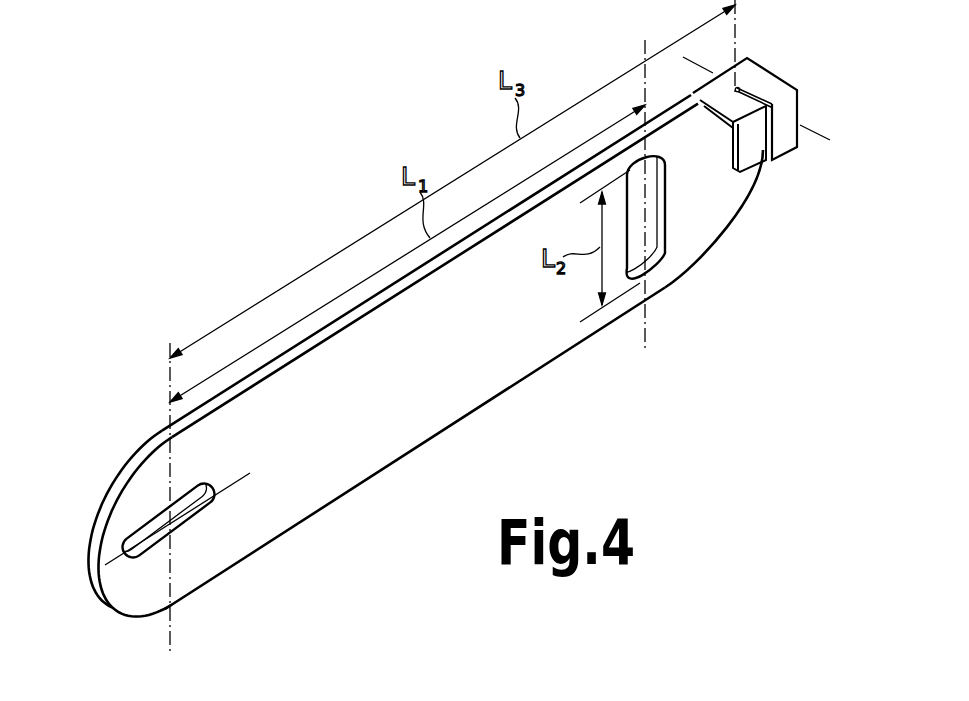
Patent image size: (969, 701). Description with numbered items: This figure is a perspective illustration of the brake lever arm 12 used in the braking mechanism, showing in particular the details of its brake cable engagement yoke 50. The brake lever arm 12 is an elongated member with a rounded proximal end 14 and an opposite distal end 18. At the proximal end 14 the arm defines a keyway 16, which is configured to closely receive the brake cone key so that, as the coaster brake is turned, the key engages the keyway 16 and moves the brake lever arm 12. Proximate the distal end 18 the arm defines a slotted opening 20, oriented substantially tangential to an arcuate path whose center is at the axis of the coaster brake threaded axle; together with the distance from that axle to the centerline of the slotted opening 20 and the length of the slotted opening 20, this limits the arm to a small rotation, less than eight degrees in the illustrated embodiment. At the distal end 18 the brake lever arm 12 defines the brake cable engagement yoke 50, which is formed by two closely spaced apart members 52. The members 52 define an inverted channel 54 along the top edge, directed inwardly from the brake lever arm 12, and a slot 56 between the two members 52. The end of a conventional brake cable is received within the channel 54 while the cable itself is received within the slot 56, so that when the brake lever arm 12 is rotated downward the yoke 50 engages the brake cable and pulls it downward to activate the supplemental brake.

The brake lever arm 12 is at (400, 356).
The proximal end 14 is at (108, 490).
The keyway 16 is at (192, 525).
The distal end 18 is at (702, 265).
The slotted opening 20 is at (658, 228).
The brake cable engagement yoke 50 is at (767, 128).
The members 52 is at (758, 150).
The inverted channel 54 is at (712, 113).
The slot 56 is at (777, 137).